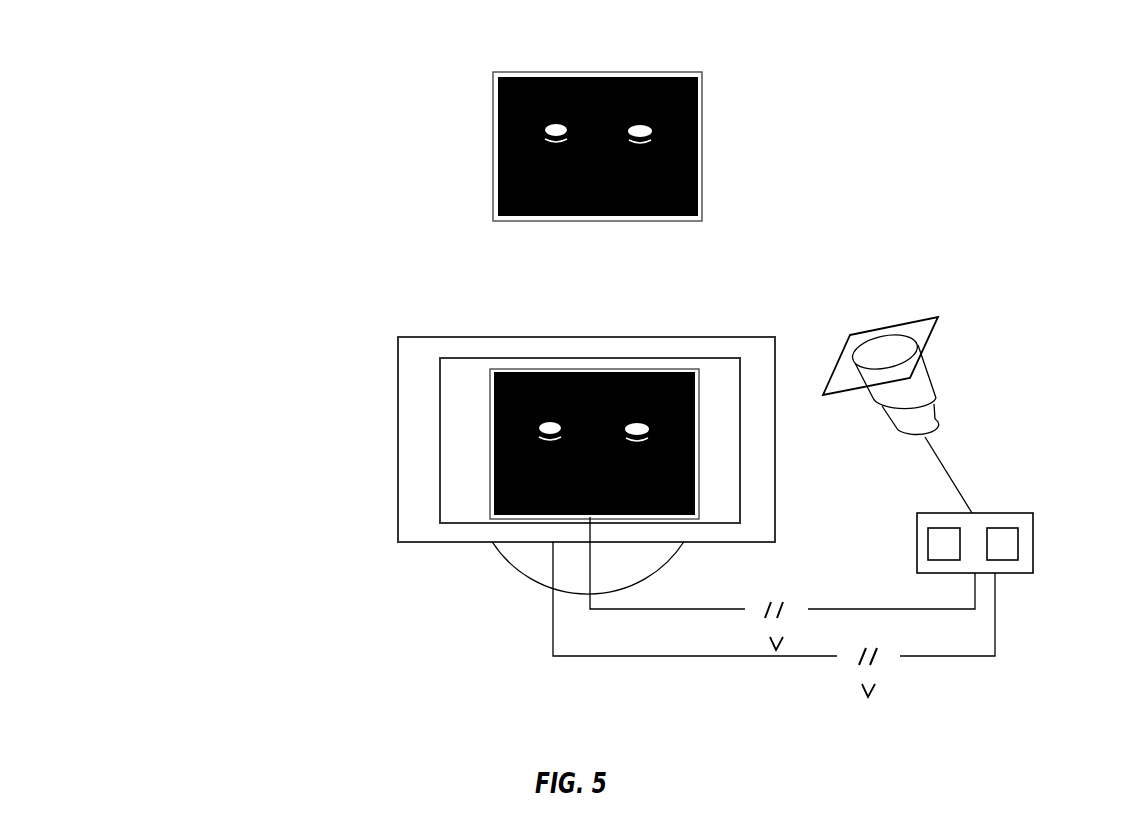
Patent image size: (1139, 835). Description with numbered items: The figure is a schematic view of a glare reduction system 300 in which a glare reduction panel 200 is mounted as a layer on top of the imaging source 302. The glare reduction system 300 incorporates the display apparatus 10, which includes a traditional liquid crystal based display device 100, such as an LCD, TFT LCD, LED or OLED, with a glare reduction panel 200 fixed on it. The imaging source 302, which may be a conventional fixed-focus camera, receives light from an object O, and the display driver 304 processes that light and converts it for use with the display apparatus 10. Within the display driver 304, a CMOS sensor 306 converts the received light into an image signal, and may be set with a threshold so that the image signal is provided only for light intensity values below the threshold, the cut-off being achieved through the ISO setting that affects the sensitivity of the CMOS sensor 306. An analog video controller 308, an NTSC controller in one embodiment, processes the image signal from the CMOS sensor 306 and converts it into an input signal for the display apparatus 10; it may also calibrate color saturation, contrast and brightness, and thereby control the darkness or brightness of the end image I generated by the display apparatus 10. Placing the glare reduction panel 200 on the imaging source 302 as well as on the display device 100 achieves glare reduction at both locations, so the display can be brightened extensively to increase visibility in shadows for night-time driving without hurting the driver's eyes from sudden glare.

The glare reduction system 300 is at (210, 103).
The display apparatus 10 is at (347, 378).
The display device 100 is at (760, 337).
The glare reduction panel 200 is at (740, 443).
The imaging source 302 is at (935, 380).
The display driver 304 is at (1033, 515).
The CMOS sensor 306 is at (942, 546).
The analog video controller 308 is at (1005, 548).
The end image I is at (483, 443).
The object O is at (698, 143).